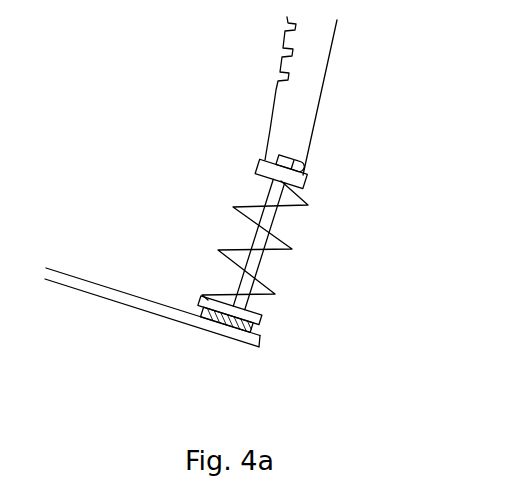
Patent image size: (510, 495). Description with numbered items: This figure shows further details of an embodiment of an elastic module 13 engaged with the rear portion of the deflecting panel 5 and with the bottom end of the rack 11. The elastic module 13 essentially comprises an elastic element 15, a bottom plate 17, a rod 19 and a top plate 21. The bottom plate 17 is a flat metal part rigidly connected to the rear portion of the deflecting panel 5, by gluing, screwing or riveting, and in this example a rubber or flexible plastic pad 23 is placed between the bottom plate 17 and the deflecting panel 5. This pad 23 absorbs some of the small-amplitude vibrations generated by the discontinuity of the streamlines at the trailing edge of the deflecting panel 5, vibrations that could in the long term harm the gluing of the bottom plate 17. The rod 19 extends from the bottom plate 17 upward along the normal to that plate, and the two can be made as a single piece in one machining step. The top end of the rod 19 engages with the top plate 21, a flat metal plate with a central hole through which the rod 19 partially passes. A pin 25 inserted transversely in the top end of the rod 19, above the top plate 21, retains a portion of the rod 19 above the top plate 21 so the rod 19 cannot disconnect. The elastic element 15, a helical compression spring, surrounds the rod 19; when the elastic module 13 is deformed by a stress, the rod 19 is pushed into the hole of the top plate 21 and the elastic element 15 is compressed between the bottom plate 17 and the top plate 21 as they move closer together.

The deflecting panel 5 is at (82, 292).
The rack 11 is at (330, 85).
The elastic module 13 is at (138, 106).
The elastic element 15 is at (293, 250).
The bottom plate 17 is at (270, 322).
The rod 19 is at (247, 232).
The top plate 21 is at (310, 183).
The pad 23 is at (220, 332).
The pin 25 is at (258, 161).